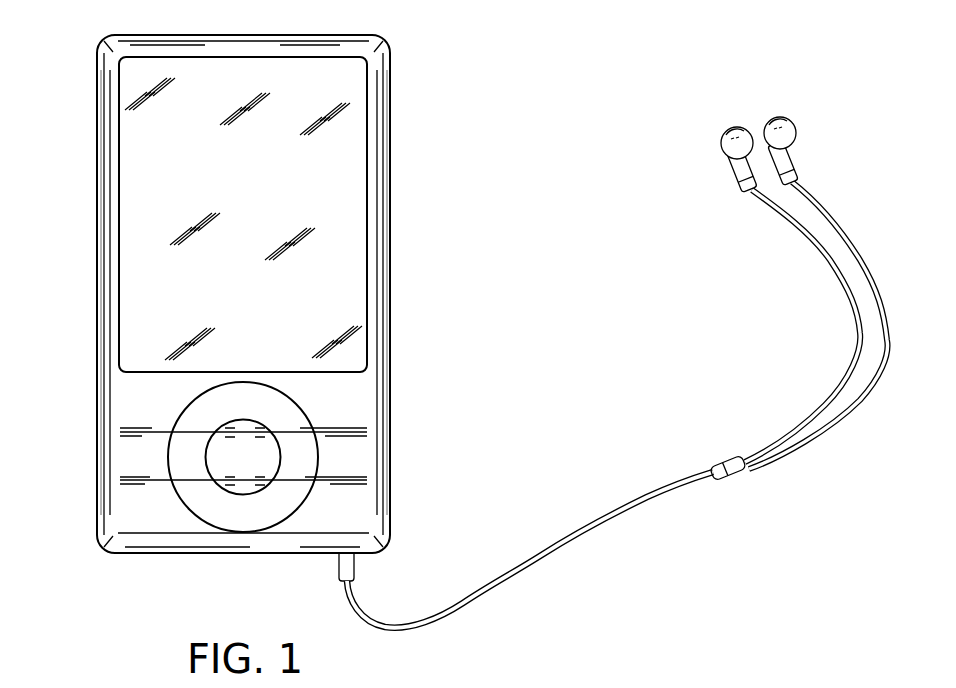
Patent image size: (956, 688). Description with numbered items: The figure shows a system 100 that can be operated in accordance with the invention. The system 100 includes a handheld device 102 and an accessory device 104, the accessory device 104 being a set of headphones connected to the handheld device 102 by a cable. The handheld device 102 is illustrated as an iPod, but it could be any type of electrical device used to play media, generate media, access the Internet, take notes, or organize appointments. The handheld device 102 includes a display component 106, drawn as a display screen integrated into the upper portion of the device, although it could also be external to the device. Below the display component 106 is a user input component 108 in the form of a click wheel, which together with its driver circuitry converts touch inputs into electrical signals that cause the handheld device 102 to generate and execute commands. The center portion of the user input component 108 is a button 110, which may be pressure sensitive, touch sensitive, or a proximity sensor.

The system 100 is at (262, 22).
The handheld device 102 is at (380, 50).
The accessory device 104 is at (780, 217).
The display component 106 is at (352, 230).
The user input component 108 is at (303, 457).
The button 110 is at (228, 456).